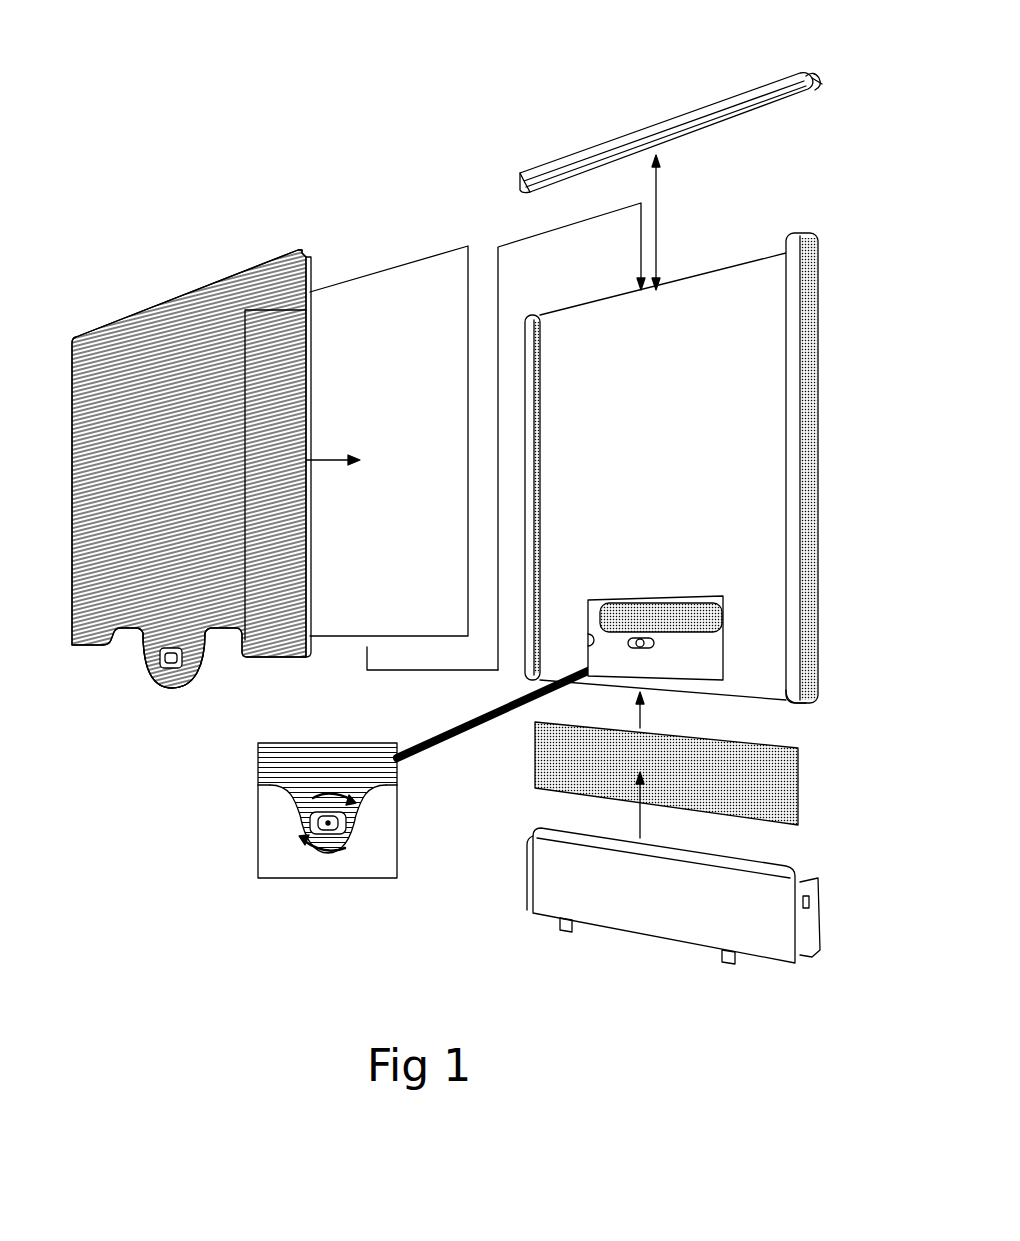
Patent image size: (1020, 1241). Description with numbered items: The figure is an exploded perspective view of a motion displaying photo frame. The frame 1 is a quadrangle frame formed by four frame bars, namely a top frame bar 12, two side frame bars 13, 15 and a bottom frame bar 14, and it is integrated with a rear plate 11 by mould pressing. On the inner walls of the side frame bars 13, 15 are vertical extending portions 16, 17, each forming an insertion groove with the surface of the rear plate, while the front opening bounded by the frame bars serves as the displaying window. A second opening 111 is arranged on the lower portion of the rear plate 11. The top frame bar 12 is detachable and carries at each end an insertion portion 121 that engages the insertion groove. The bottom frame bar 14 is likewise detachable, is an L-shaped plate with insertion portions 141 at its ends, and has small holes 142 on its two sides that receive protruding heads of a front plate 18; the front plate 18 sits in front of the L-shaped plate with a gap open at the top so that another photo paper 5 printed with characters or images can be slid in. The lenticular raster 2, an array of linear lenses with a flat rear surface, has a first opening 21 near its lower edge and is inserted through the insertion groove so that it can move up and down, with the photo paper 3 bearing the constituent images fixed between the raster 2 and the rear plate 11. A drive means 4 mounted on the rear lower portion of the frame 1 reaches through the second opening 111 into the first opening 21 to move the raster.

The frame 1 is at (685, 248).
The rear plate 11 is at (757, 273).
The second opening 111 is at (593, 632).
The top frame bar 12 is at (600, 142).
The insertion portion 121 is at (822, 82).
The side frame bar 13 is at (532, 318).
The bottom frame bar 14 is at (807, 885).
The insertion portion 141 is at (803, 923).
The small holes 142 is at (810, 900).
The side frame bar 15 is at (812, 253).
The vertical extending portion 16 is at (541, 338).
The vertical extending portion 17 is at (793, 688).
The front plate 18 is at (563, 895).
The lenticular raster 2 is at (252, 262).
The first opening 21 is at (172, 668).
The photo paper 3 is at (392, 267).
The drive means 4 is at (677, 662).
The photo paper 5 is at (775, 778).